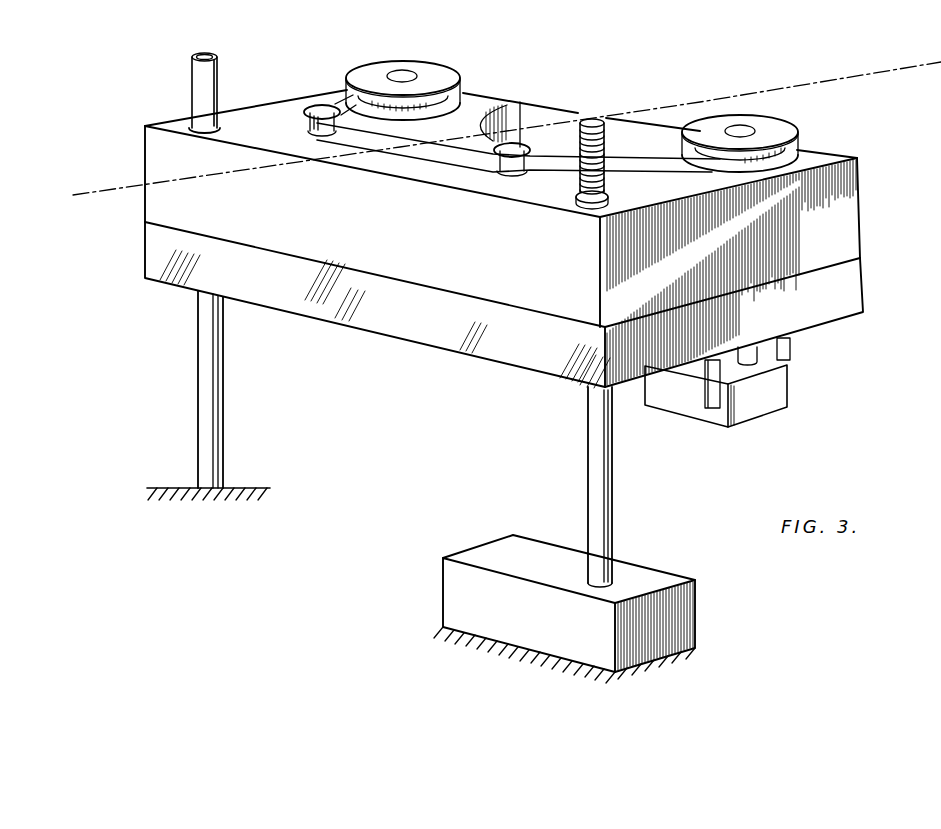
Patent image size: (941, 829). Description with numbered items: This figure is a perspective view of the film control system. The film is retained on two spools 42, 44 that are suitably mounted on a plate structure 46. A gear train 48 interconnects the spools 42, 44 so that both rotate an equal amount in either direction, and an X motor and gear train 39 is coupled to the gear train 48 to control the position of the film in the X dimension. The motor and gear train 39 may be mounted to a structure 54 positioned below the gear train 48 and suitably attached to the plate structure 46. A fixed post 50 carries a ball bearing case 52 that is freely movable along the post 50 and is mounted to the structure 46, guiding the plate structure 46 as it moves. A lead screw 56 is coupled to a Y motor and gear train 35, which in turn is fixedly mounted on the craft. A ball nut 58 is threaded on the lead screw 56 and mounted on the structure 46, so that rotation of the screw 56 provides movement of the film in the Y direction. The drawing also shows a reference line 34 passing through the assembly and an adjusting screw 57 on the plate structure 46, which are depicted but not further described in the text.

The reference axis line 34 is at (733, 94).
The motor and gear train 35 is at (657, 582).
The motor and gear train 39 is at (752, 408).
The spool 42 is at (437, 68).
The spool 44 is at (770, 135).
The plate structure 46 is at (455, 175).
The gear train 48 is at (840, 298).
The fixed post 50 is at (208, 438).
The ball bearing case 52 is at (193, 128).
The structure 54 is at (415, 342).
The lead screw 56 is at (600, 440).
The adjusting screw 57 is at (627, 155).
The ball nut 58 is at (590, 212).